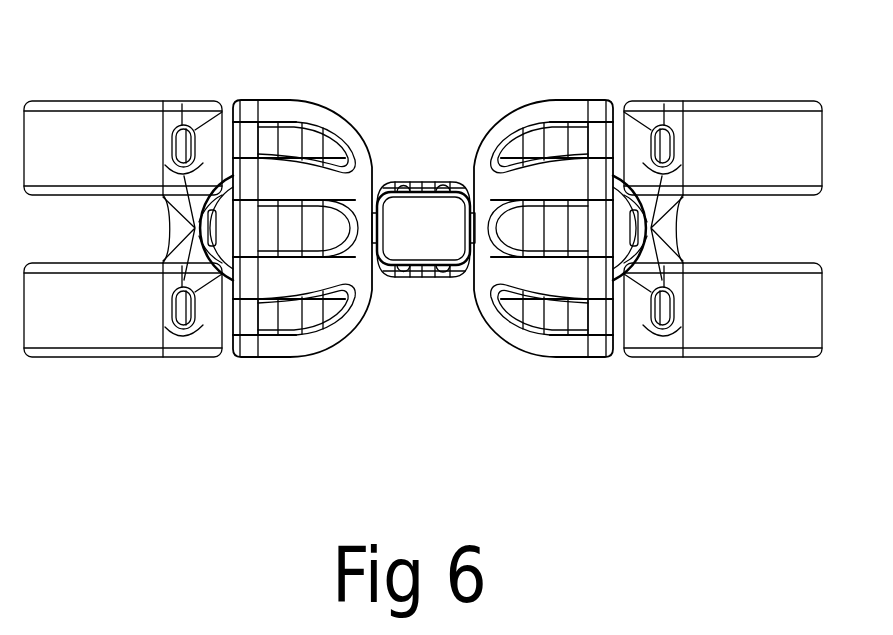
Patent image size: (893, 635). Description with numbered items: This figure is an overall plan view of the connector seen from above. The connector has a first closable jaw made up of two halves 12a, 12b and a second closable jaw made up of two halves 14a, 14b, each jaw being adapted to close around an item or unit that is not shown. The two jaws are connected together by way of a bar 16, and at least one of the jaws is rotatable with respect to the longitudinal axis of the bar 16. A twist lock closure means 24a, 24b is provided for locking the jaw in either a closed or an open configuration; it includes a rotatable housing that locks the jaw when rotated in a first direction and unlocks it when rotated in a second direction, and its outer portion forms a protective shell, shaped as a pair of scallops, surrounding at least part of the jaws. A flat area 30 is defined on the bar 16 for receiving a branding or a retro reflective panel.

The first closable jaw 12a is at (85, 310).
The first closable jaw 12b is at (83, 128).
The second closable jaw 14a is at (753, 313).
The second closable jaw 14b is at (760, 143).
The bar 16 is at (422, 188).
The twist lock closure means 24a is at (290, 315).
The twist lock closure means 24b is at (552, 140).
The flat area 30 is at (415, 233).